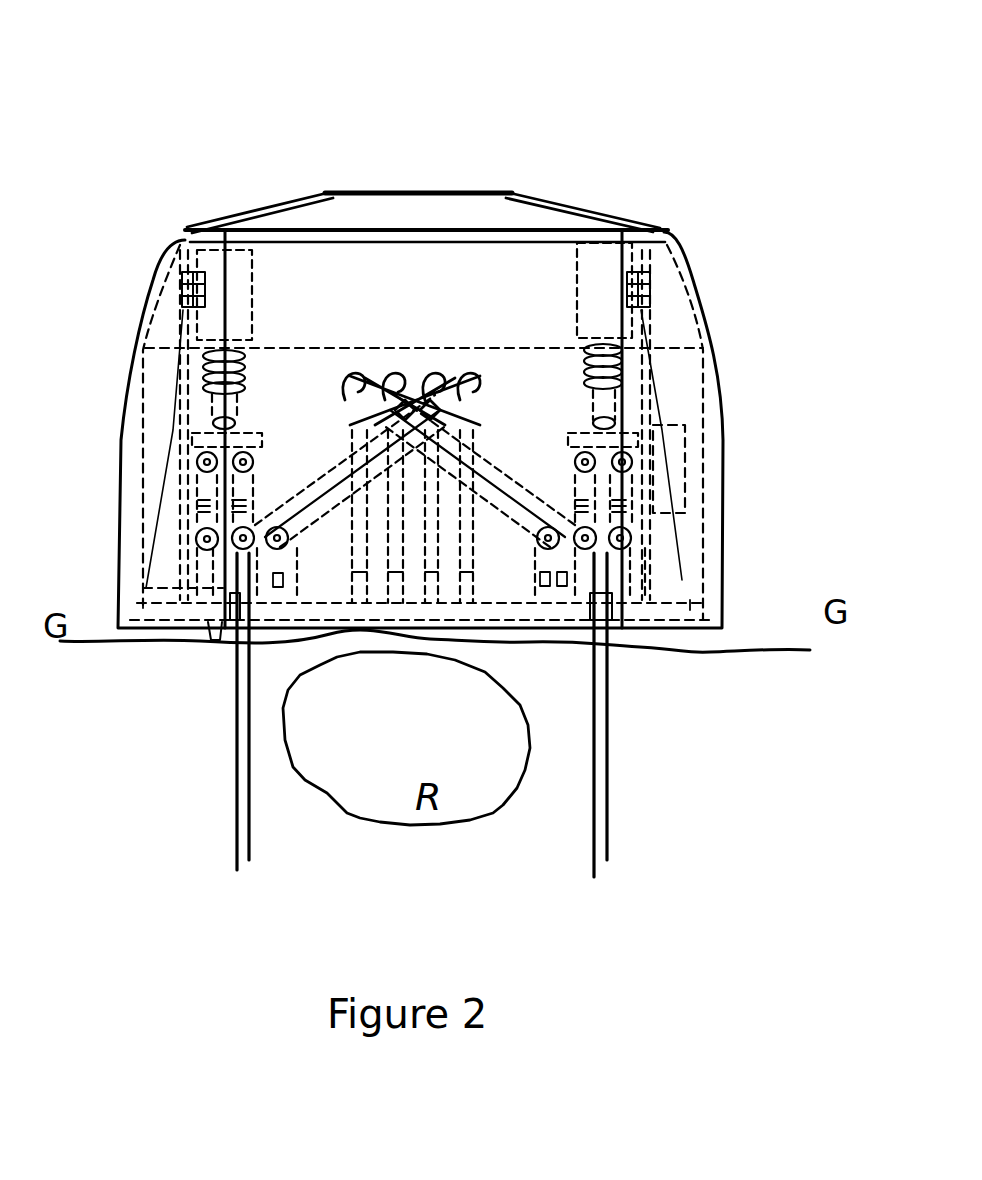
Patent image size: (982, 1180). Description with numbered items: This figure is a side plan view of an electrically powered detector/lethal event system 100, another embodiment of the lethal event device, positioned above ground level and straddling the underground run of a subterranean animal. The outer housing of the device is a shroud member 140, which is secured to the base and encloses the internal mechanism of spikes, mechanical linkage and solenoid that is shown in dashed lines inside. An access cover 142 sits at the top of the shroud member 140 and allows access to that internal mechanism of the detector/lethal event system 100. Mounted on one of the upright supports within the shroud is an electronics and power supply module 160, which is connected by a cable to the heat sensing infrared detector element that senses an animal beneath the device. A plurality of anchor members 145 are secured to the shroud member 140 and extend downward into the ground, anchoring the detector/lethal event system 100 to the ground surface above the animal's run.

The detector/lethal event system 100 is at (475, 444).
The access cover 142 is at (395, 212).
The shroud member 140 is at (708, 326).
The electronics and power supply module 160 is at (680, 458).
The anchor members 145 is at (238, 813).